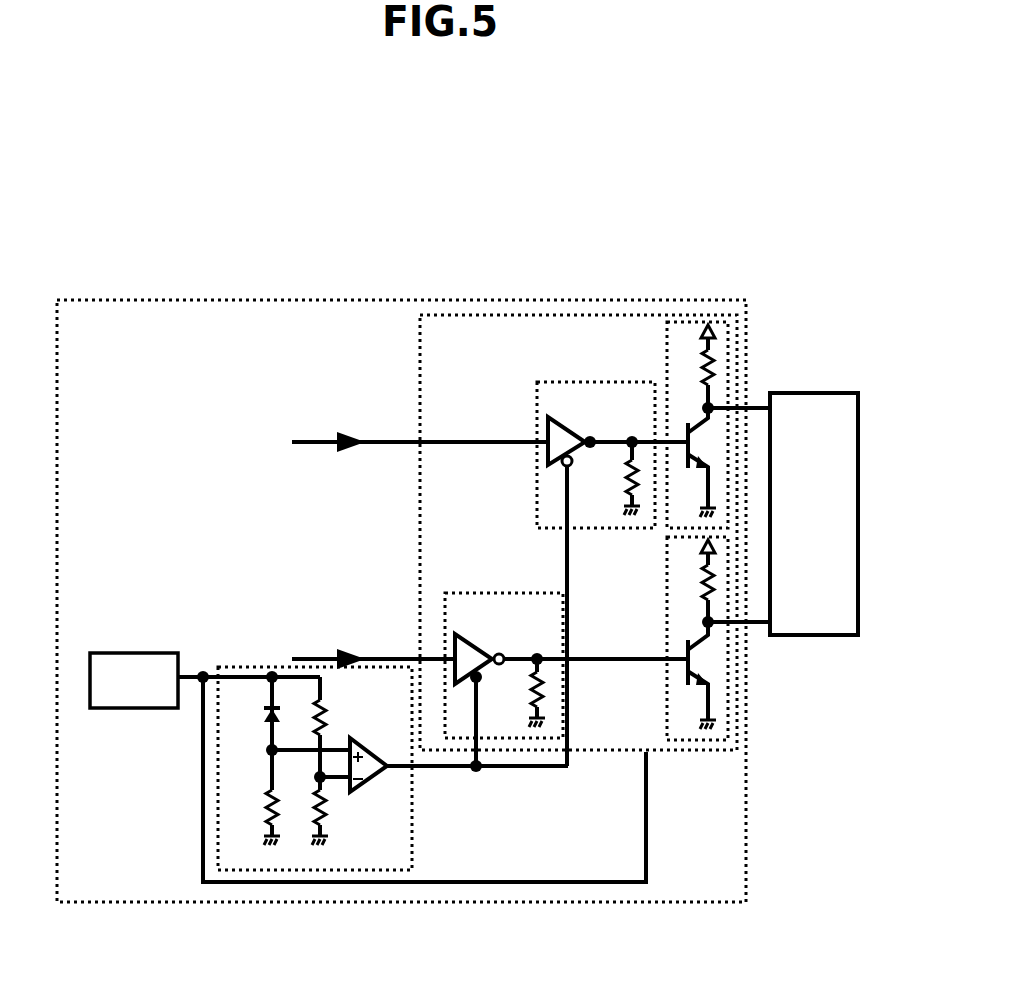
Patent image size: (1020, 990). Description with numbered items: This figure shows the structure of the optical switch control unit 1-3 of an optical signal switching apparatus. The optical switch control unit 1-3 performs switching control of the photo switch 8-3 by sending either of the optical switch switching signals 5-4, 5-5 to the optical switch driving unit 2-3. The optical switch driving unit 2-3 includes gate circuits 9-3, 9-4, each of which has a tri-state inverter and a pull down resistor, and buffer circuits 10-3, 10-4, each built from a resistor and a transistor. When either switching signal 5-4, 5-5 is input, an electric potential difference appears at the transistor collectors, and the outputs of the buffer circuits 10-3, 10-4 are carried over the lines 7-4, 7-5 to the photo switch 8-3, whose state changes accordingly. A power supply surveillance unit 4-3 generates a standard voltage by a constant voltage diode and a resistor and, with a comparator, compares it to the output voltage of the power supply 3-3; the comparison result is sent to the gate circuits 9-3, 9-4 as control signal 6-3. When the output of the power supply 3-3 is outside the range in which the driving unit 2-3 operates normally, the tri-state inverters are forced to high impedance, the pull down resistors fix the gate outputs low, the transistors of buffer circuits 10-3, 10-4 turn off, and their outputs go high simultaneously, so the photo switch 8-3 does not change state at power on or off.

The optical switch control unit 1-3 is at (194, 300).
The optical switch driving unit 2-3 is at (420, 368).
The power supply 3-3 is at (150, 708).
The power supply surveillance unit 4-3 is at (345, 870).
The optical switch switching signal 5-4 is at (435, 442).
The optical switch switching signal 5-5 is at (388, 657).
The control signal 6-3 is at (553, 770).
The first drive output line 7-4 is at (728, 408).
The second drive output line 7-5 is at (735, 622).
The photo switch 8-3 is at (790, 393).
The gate circuit 9-3 is at (590, 382).
The gate circuit 9-4 is at (515, 738).
The buffer circuit 10-3 is at (680, 322).
The buffer circuit 10-4 is at (680, 742).